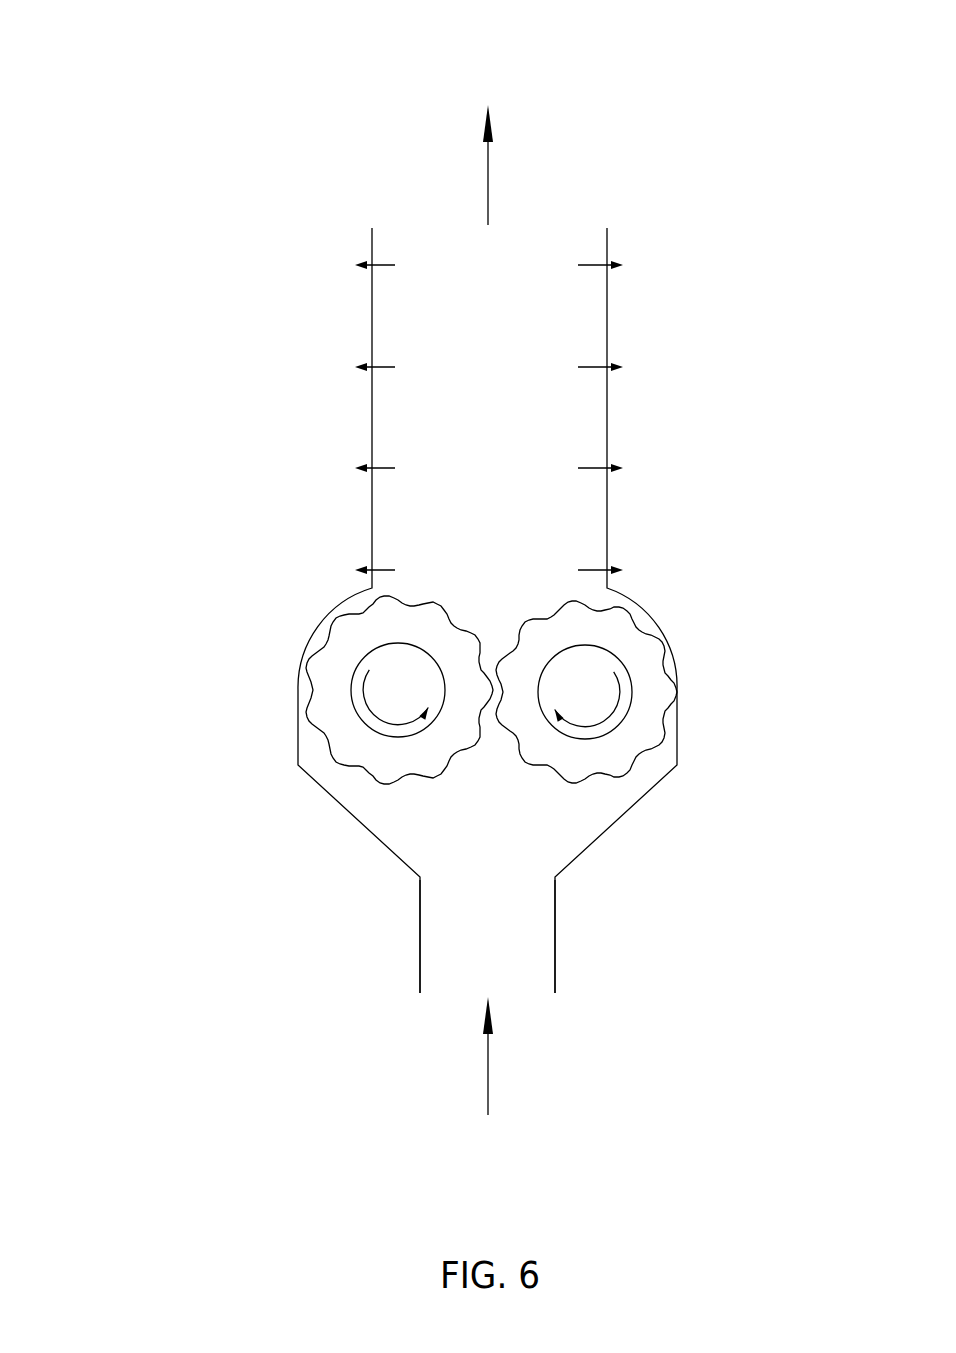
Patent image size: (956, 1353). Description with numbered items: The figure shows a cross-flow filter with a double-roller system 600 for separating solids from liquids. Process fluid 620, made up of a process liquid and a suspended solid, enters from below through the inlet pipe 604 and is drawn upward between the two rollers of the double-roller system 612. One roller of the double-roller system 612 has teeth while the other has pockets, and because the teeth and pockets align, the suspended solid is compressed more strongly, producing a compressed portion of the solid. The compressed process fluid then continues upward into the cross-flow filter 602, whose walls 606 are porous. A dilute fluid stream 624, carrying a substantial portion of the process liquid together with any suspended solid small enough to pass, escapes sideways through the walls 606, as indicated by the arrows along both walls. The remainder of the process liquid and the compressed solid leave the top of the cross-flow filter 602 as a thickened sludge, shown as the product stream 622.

The cross-flow filter with a double-roller system 600 is at (170, 70).
The cross-flow filter 602 is at (358, 245).
The inlet pipe 604 is at (555, 928).
The walls 606 is at (607, 333).
The double-roller system 612 is at (335, 715).
The process fluid 620 is at (488, 1080).
The product stream 622 is at (488, 144).
The dilute fluid stream 624 is at (489, 417).